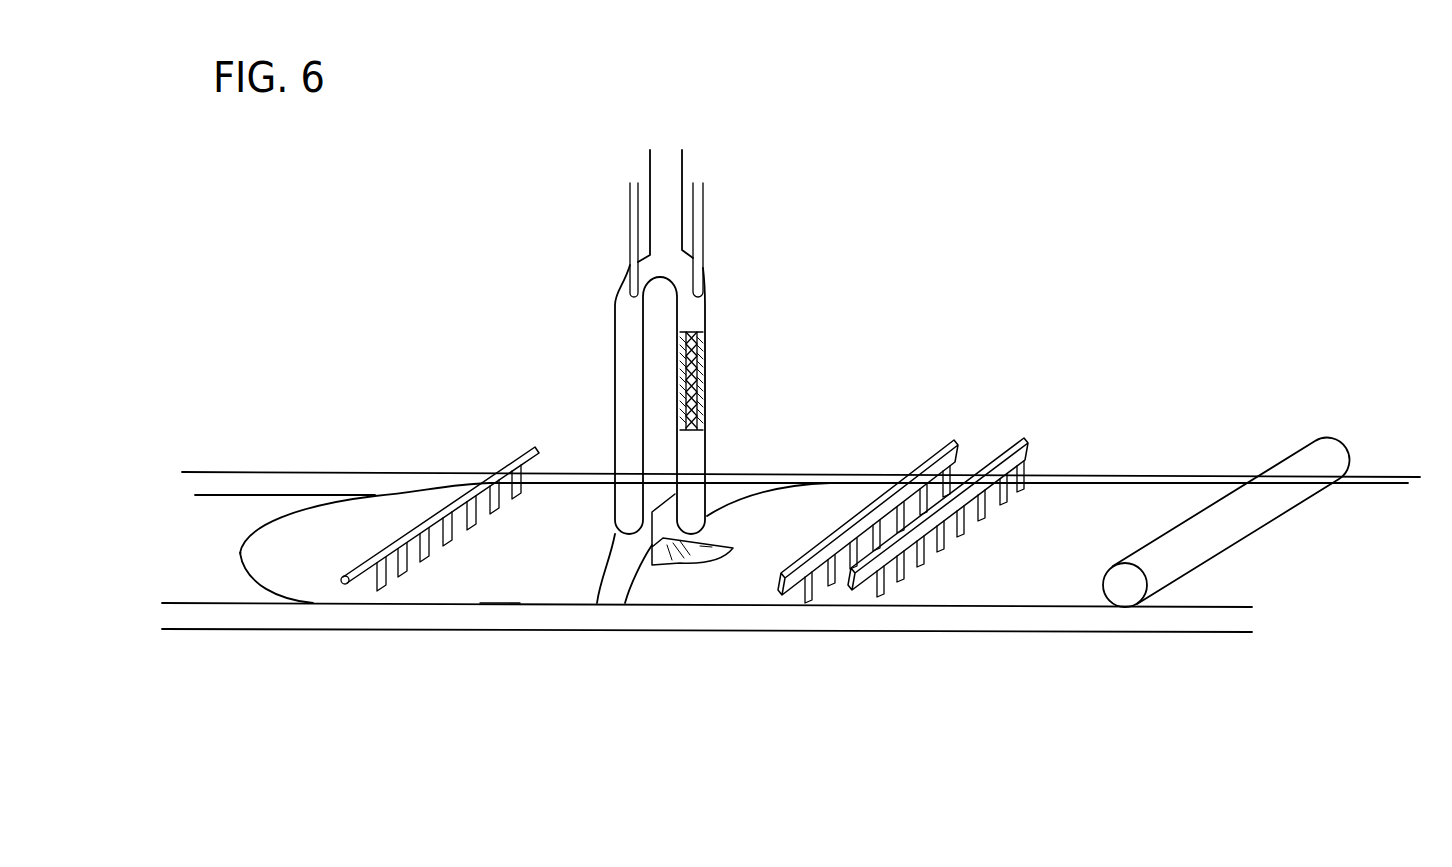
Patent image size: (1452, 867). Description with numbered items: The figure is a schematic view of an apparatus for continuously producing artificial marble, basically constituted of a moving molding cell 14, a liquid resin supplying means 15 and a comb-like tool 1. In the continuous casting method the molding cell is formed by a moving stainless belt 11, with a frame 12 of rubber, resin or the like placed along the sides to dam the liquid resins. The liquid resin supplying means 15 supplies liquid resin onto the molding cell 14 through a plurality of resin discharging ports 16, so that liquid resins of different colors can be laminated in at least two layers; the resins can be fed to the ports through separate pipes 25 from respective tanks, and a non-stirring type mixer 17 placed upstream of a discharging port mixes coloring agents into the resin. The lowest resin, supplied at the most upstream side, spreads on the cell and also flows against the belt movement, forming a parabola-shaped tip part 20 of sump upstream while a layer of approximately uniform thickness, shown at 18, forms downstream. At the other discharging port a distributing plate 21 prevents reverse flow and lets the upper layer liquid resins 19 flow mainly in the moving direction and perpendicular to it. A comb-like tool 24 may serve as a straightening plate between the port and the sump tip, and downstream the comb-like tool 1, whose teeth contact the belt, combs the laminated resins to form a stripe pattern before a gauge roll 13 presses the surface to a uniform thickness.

The molding cell 14 is at (197, 530).
The stainless belt 11 is at (285, 505).
The frame 12 is at (390, 478).
The comb 24 is at (533, 447).
The liquid resin supplying means 15 is at (628, 308).
The separate pipes 25 is at (697, 238).
The non-stirring type mixer 17 is at (707, 375).
The upper layer liquid resins 19 is at (810, 502).
The comb-like tool 1 is at (933, 463).
The gauge roll 13 is at (1315, 453).
The tip part of sump 20 is at (240, 553).
The dough layer 18 is at (493, 587).
The resin discharging ports 16 is at (608, 603).
The distributing plate 21 is at (697, 565).